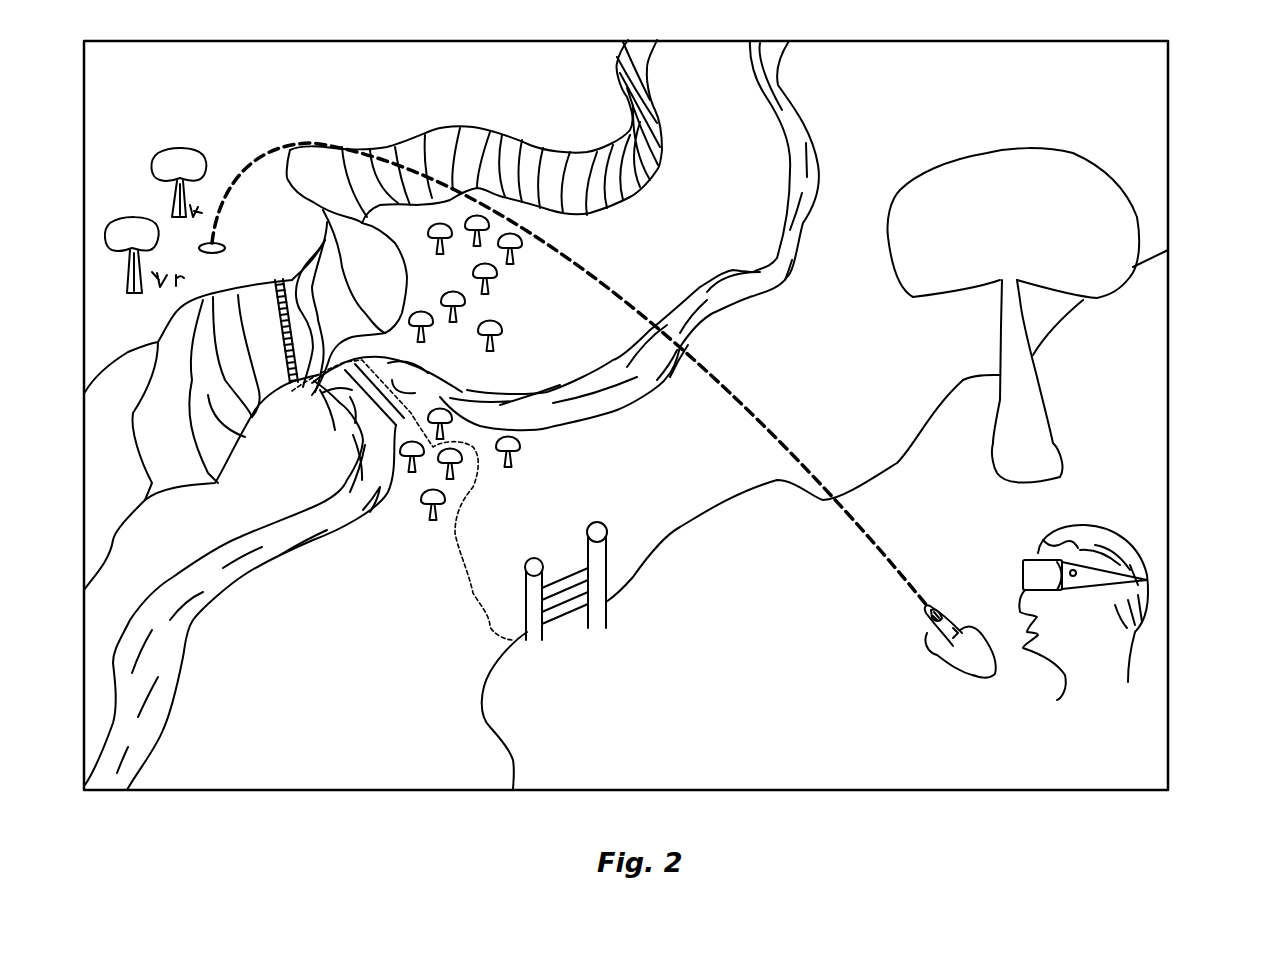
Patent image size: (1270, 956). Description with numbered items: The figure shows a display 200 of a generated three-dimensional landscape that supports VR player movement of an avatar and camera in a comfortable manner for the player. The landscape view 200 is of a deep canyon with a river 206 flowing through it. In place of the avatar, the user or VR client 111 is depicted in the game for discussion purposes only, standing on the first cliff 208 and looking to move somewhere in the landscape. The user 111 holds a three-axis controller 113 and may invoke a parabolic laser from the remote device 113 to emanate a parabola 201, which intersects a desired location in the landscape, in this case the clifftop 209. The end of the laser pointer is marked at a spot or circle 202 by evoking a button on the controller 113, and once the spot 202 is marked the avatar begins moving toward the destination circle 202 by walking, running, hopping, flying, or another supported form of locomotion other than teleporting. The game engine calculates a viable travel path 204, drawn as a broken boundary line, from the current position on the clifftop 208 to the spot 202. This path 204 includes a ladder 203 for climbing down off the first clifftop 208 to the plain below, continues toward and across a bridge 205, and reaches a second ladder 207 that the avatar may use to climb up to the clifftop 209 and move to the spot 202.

The display 200 is at (1204, 133).
The parabola 201 is at (766, 426).
The spot or circle 202 is at (222, 248).
The ladder 203 is at (606, 547).
The travel path 204 is at (460, 553).
The bridge 205 is at (458, 373).
The river 206 is at (773, 243).
The second ladder 207 is at (283, 302).
The first cliff 208 is at (517, 752).
The clifftop 209 is at (581, 120).
The VR client 111 is at (976, 722).
The 3-axis controller 113 is at (928, 616).